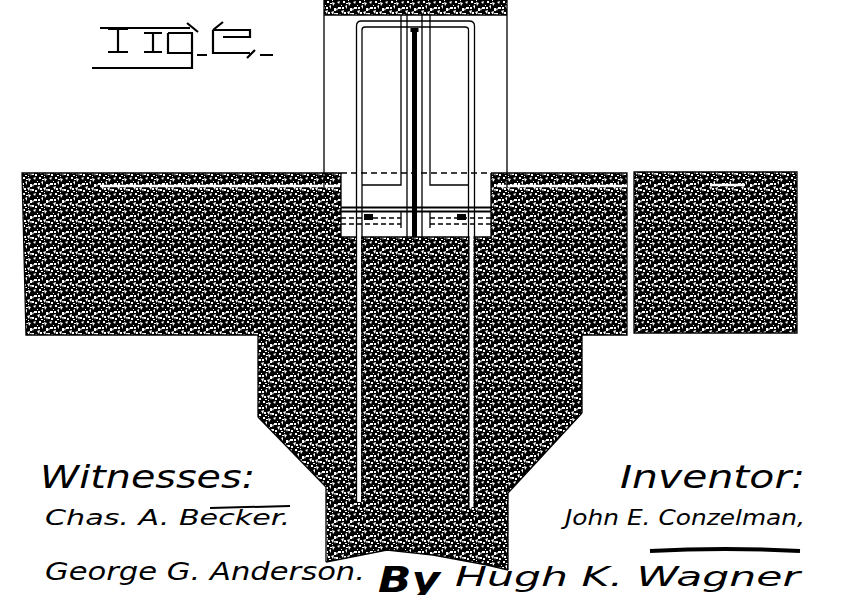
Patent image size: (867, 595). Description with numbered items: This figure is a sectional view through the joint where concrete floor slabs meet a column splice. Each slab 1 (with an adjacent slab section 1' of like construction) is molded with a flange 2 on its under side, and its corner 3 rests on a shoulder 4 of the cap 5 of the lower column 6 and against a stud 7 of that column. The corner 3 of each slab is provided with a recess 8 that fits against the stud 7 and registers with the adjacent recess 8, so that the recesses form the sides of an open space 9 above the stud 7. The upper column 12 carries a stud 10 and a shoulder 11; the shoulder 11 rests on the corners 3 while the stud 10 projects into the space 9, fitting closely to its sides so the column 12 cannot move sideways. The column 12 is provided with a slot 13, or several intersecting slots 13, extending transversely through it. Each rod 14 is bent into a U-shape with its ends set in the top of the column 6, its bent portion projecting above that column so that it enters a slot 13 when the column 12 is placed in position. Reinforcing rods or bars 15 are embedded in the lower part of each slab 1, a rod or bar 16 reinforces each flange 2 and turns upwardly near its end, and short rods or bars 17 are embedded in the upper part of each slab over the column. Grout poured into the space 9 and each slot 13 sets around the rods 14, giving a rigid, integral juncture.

The slab 1 is at (409, 229).
The adjacent slab section 1' is at (559, 236).
The flange 2 is at (248, 333).
The corner 3 is at (532, 175).
The shoulder 4 is at (258, 358).
The cap 5 is at (257, 405).
The column 6 is at (510, 530).
The stud 7 is at (432, 236).
The recess 8 is at (310, 172).
The open space 9 is at (415, 217).
The stud 10 is at (347, 182).
The shoulder 11 is at (332, 170).
The column 12 is at (507, 8).
The slot 13 is at (432, 64).
The rod 14 is at (418, 80).
The reinforcing rod 15 is at (52, 176).
The rod or bar 16 is at (523, 173).
The short rod 17 is at (262, 175).